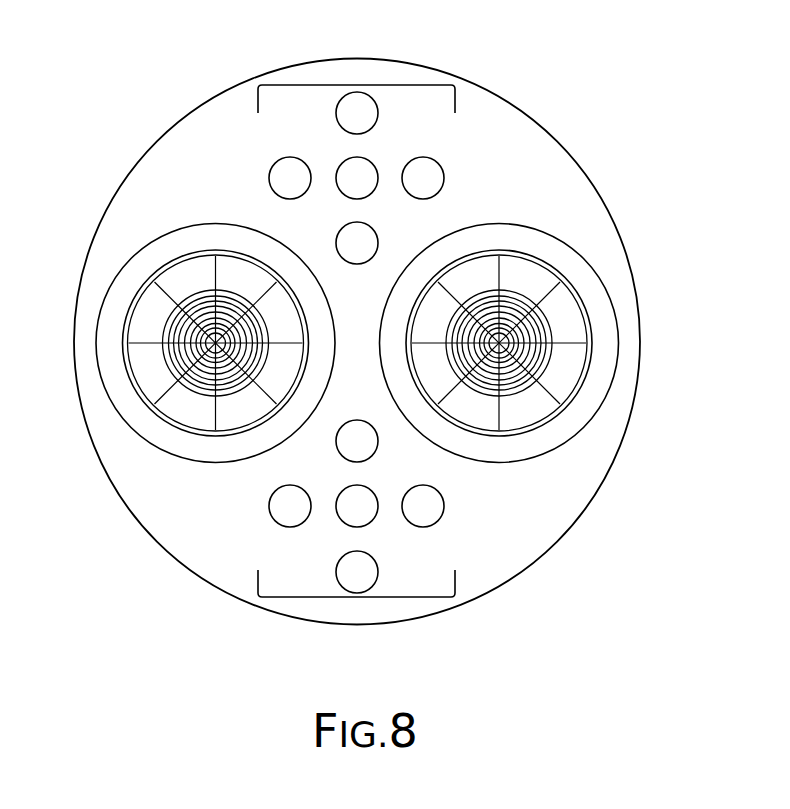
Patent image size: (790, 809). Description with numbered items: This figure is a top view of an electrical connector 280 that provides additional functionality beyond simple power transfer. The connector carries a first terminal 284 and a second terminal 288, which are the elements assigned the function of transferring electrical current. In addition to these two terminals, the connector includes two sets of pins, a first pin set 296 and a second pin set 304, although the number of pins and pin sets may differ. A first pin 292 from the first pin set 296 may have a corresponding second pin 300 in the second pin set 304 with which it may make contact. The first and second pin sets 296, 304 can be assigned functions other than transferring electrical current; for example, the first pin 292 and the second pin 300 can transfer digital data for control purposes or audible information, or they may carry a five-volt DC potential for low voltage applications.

The electrical connector 280 is at (622, 149).
The first terminal 284 is at (567, 333).
The second terminal 288 is at (146, 371).
The first pin 292 is at (290, 176).
The first pin set 296 is at (357, 85).
The second pin 300 is at (284, 504).
The second pin set 304 is at (357, 597).